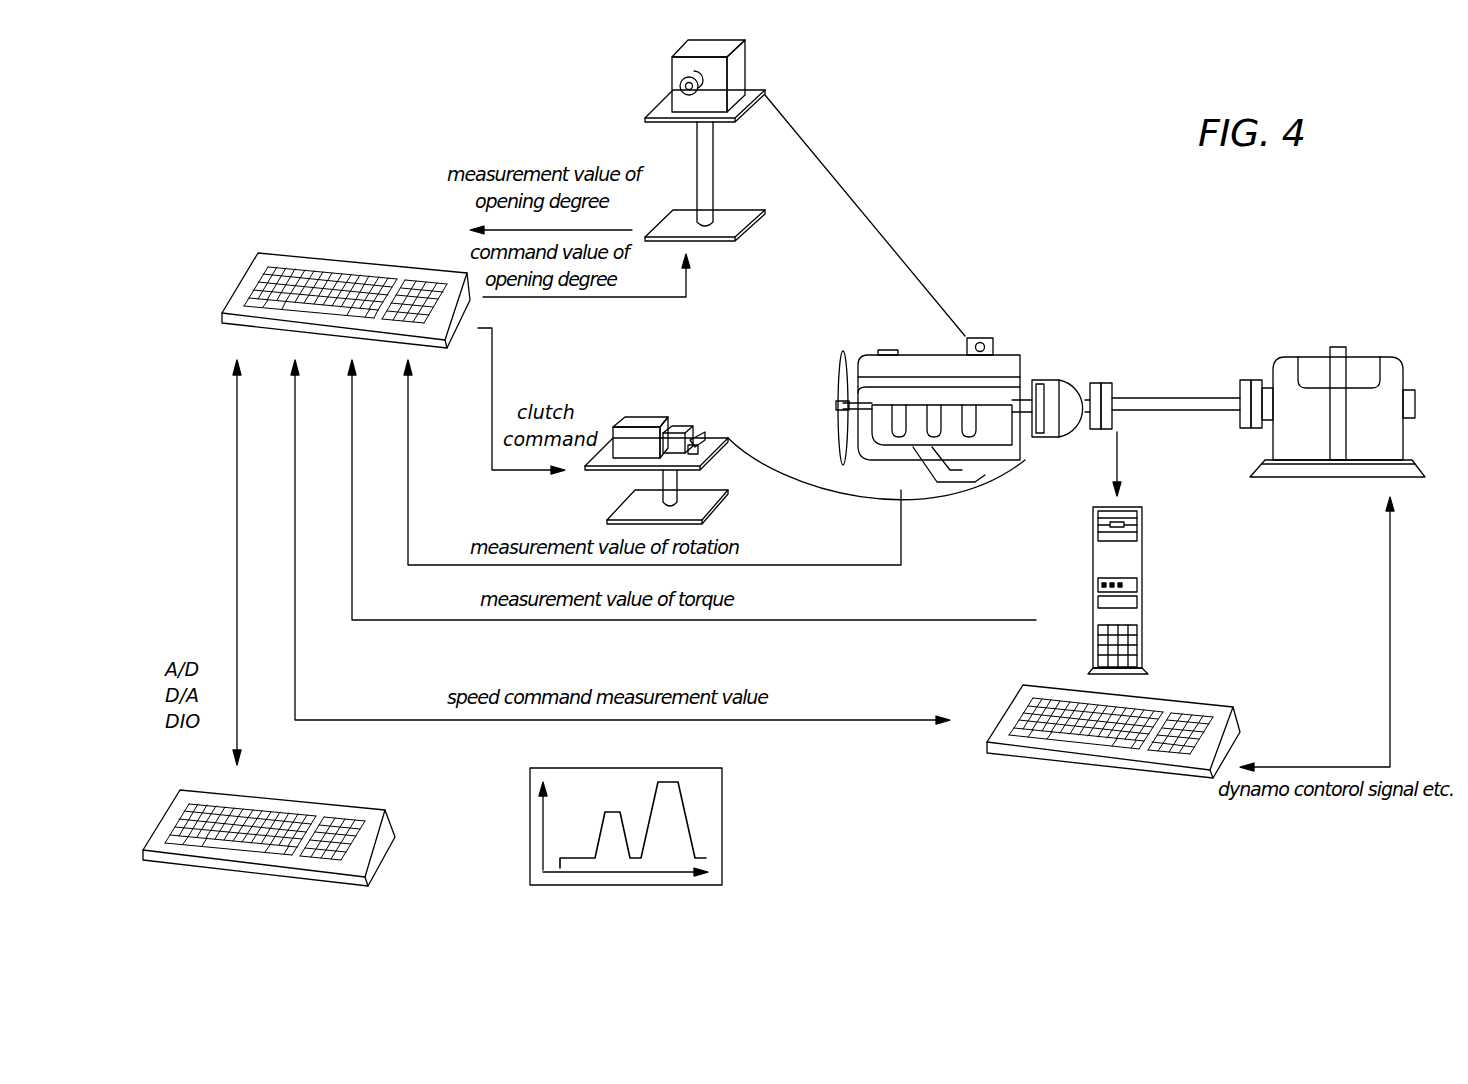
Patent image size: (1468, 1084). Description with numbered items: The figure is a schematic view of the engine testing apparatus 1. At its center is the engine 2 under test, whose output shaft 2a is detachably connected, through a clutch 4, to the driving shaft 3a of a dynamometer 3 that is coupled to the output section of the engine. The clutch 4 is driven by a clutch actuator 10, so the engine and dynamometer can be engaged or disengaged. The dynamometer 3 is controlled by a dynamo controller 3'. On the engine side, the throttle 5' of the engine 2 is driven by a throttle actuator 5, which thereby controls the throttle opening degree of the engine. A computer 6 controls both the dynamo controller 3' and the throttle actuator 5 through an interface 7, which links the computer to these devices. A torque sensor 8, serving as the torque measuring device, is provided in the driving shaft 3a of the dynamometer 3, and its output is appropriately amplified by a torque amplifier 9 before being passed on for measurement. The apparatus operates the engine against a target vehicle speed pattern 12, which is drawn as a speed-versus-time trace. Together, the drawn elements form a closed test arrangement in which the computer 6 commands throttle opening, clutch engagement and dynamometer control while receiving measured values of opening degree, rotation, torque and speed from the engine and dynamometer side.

The engine testing apparatus 1 is at (598, 86).
The engine under test 2 is at (1020, 354).
The output shaft 2a is at (1025, 440).
The dynamometer 3 is at (1340, 382).
The dynamo controller 3' is at (1113, 777).
The driving shaft 3a is at (1195, 413).
The clutch 4 is at (1046, 392).
The throttle actuator 5 is at (745, 140).
The throttle 5' is at (968, 290).
The computer 6 is at (395, 827).
The interface 7 is at (318, 258).
The torque sensor 8 is at (1095, 384).
The torque amplifier 9 is at (1142, 562).
The clutch actuator 10 is at (652, 416).
The target vehicle speed pattern 12 is at (722, 826).